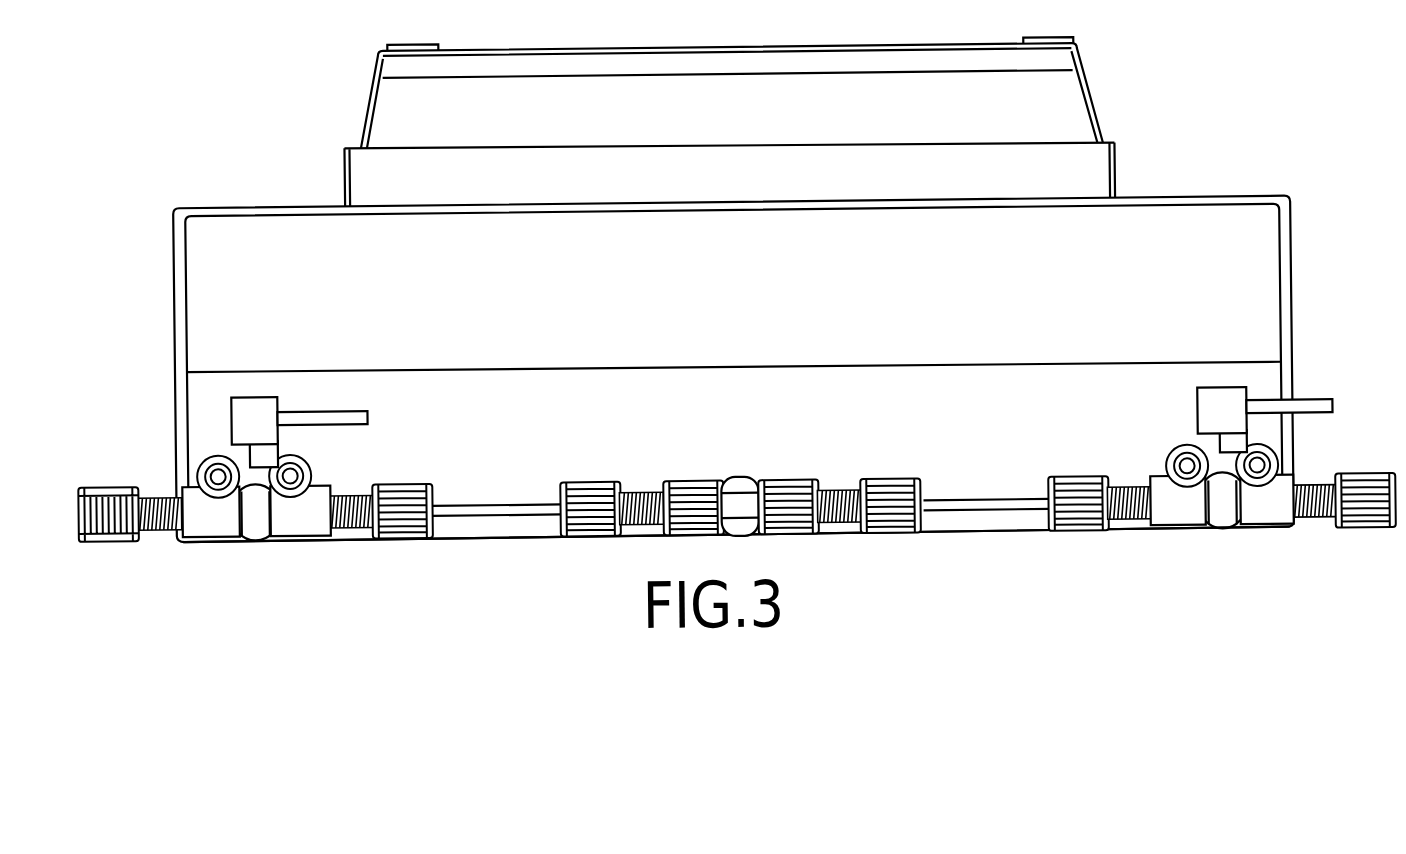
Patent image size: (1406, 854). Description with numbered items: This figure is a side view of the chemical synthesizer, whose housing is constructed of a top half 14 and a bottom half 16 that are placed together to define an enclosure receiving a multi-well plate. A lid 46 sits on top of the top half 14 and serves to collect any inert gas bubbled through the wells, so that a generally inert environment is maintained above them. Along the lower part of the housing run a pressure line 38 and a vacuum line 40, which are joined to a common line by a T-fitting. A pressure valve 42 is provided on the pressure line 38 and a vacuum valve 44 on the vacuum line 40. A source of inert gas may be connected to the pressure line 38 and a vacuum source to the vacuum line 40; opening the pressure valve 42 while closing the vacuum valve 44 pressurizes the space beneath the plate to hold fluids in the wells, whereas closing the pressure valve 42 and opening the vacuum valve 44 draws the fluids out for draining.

The top half 14 is at (237, 224).
The bottom half 16 is at (198, 380).
The pressure line 38 is at (550, 506).
The vacuum line 40 is at (1035, 507).
The pressure valve 42 is at (268, 405).
The vacuum valve 44 is at (1212, 403).
The lid 46 is at (1103, 132).